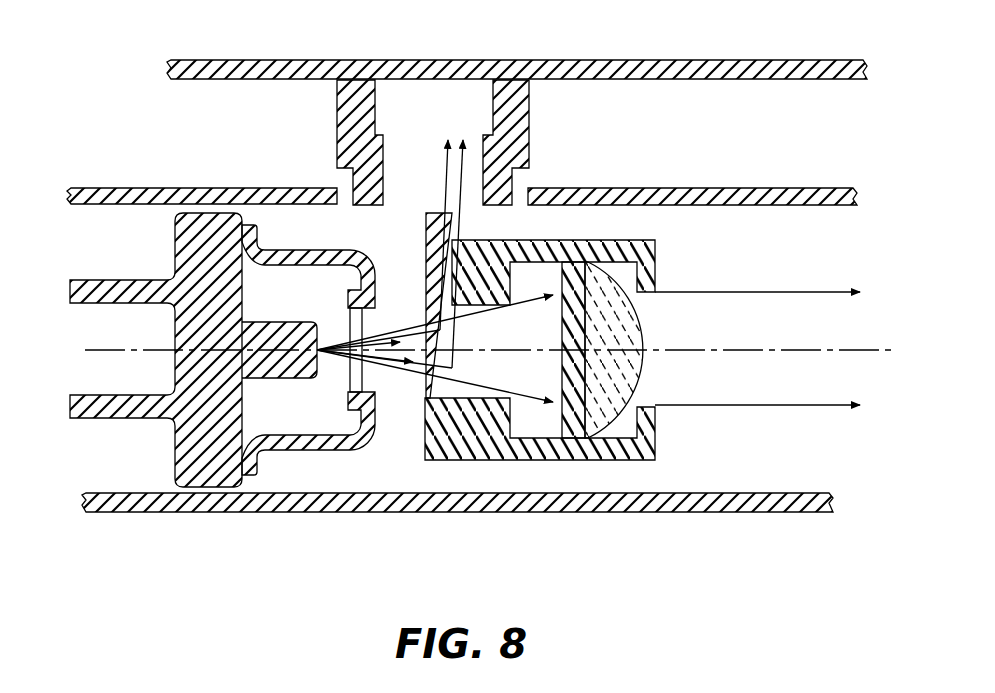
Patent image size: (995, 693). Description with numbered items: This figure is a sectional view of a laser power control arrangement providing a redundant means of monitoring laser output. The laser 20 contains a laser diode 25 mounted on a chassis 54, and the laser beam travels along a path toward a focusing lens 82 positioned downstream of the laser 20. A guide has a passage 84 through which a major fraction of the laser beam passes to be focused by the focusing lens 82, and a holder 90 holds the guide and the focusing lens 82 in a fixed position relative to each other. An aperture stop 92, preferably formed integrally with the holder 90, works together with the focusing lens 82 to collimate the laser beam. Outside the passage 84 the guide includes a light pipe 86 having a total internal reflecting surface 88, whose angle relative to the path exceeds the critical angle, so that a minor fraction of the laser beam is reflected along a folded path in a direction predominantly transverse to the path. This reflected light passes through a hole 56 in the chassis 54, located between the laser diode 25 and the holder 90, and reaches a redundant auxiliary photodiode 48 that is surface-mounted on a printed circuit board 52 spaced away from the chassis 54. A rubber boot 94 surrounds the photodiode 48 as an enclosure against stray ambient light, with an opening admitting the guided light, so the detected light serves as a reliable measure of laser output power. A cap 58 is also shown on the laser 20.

The laser 20 is at (82, 266).
The laser diode 25 is at (293, 333).
The redundant auxiliary photodiode 48 is at (434, 108).
The printed circuit board 52 is at (786, 60).
The chassis 54 is at (786, 188).
The hole 56 is at (531, 193).
The cap of light emitting device 58 is at (318, 452).
The focusing lens 82 is at (571, 425).
The passage 84 is at (488, 378).
The light pipe 86 is at (433, 210).
The total internal reflecting surface 88 is at (433, 370).
The holder 90 is at (613, 452).
The aperture stop 92 is at (643, 408).
The rubber boot 94 is at (337, 118).